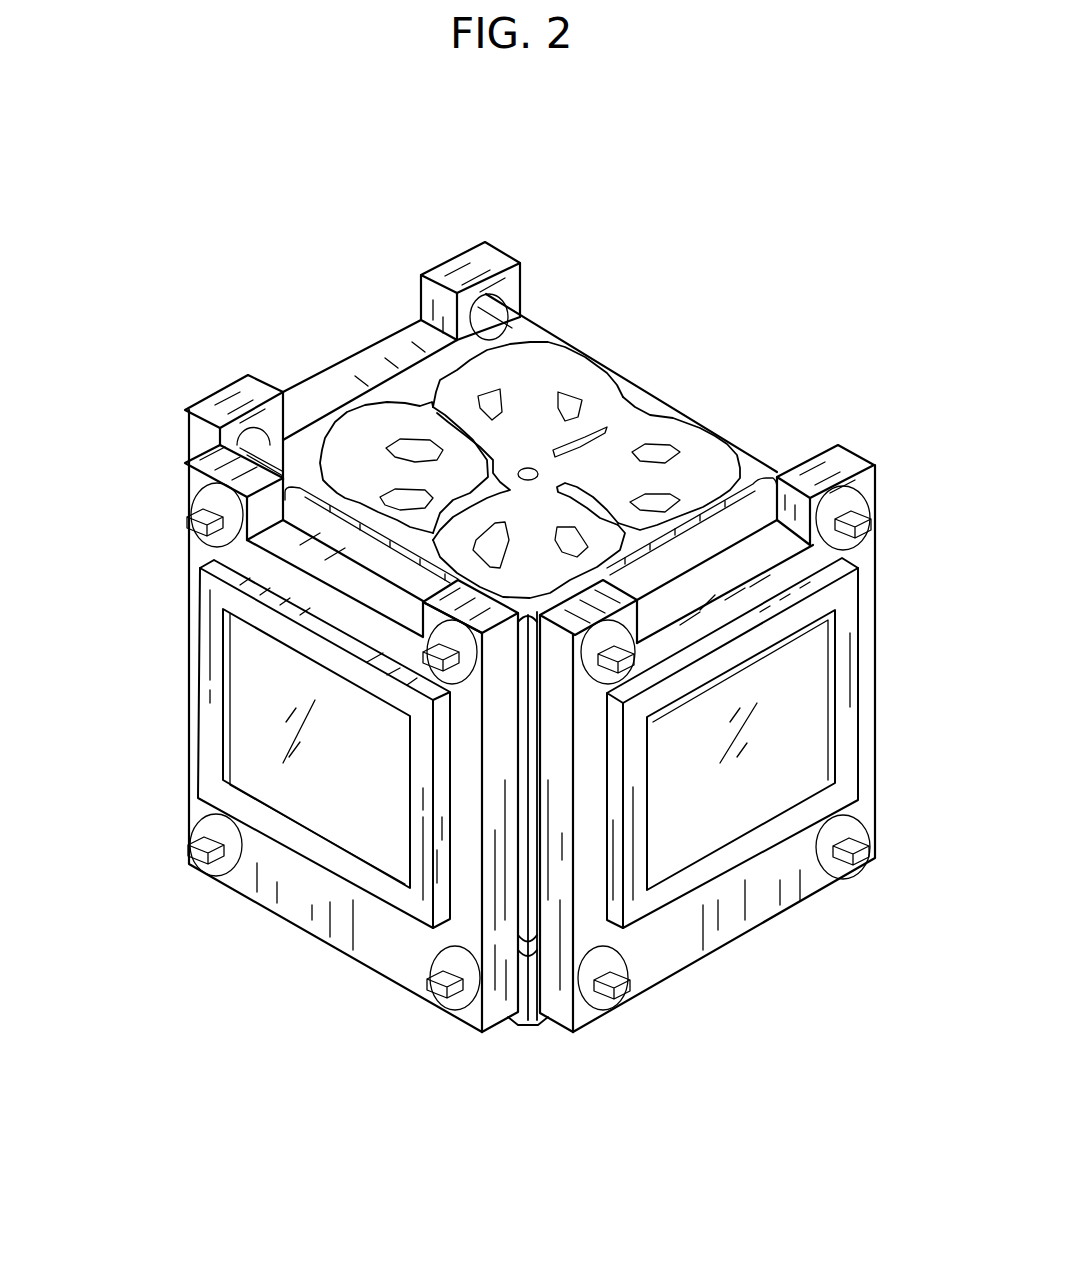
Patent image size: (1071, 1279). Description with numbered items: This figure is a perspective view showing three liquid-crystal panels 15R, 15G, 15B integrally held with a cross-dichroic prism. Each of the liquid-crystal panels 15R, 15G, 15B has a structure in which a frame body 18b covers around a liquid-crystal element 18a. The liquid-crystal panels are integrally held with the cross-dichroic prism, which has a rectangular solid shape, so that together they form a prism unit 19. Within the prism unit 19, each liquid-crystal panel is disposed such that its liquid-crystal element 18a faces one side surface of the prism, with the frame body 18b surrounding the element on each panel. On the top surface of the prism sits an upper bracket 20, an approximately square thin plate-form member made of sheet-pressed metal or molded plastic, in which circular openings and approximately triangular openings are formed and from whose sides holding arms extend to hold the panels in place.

The liquid-crystal panel 15R is at (347, 362).
The liquid-crystal panel 15G is at (298, 913).
The liquid-crystal panel 15B is at (765, 920).
The liquid-crystal element 18a is at (258, 712).
The frame body 18b is at (387, 947).
The prism unit 19 is at (518, 1062).
The upper bracket 20 is at (645, 403).